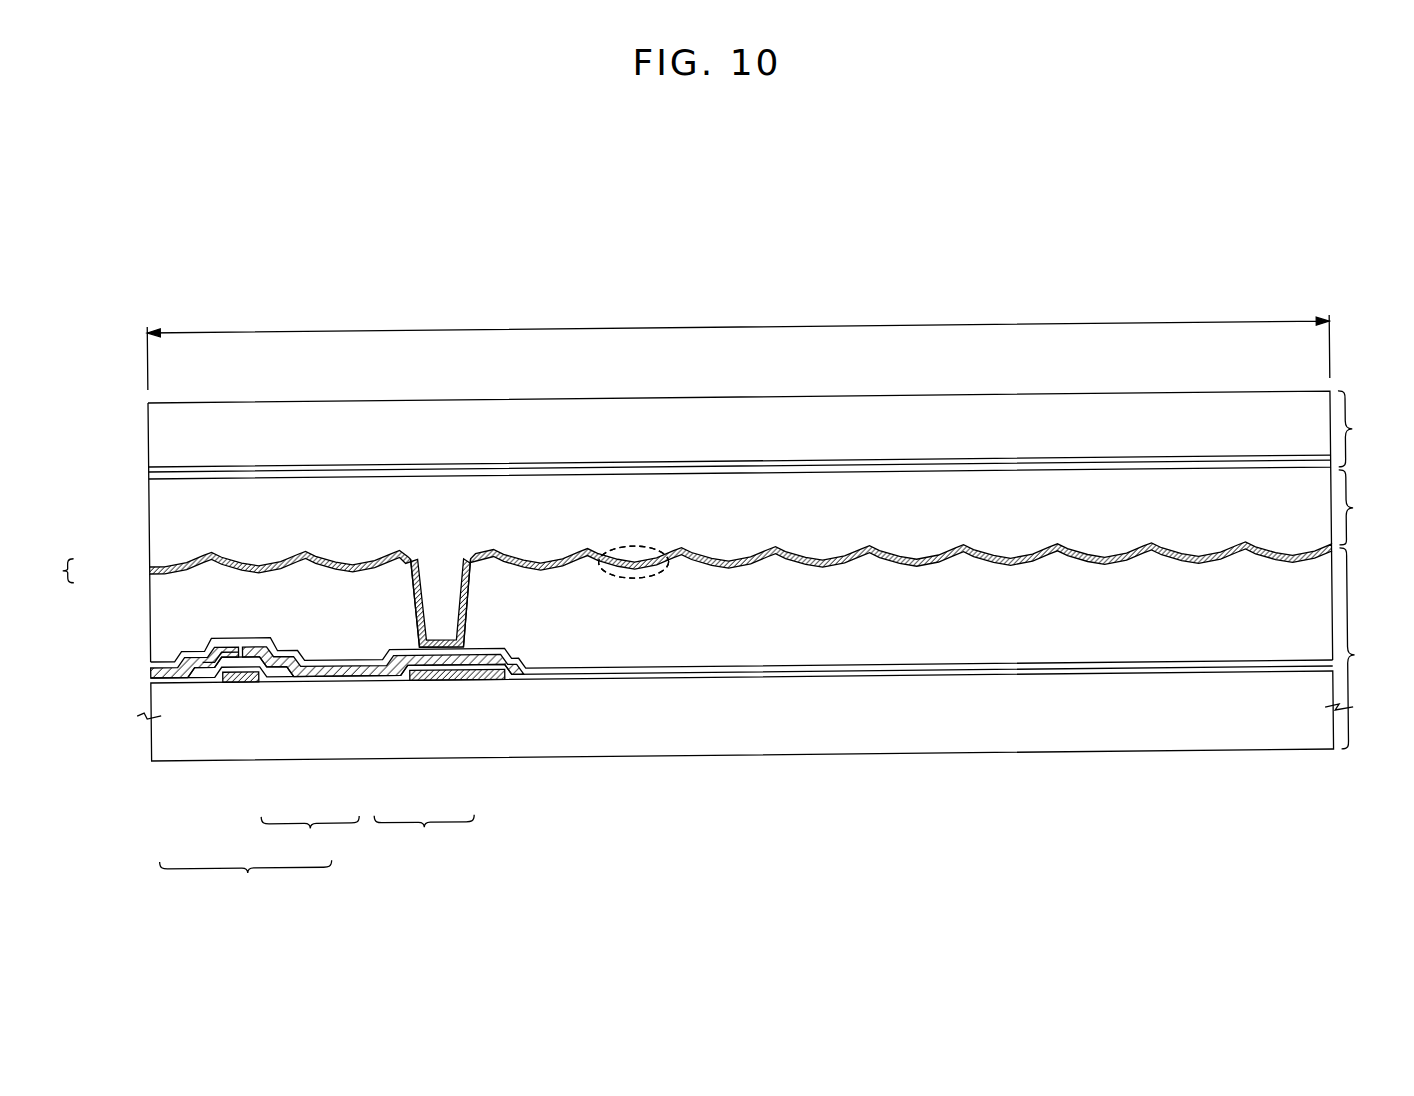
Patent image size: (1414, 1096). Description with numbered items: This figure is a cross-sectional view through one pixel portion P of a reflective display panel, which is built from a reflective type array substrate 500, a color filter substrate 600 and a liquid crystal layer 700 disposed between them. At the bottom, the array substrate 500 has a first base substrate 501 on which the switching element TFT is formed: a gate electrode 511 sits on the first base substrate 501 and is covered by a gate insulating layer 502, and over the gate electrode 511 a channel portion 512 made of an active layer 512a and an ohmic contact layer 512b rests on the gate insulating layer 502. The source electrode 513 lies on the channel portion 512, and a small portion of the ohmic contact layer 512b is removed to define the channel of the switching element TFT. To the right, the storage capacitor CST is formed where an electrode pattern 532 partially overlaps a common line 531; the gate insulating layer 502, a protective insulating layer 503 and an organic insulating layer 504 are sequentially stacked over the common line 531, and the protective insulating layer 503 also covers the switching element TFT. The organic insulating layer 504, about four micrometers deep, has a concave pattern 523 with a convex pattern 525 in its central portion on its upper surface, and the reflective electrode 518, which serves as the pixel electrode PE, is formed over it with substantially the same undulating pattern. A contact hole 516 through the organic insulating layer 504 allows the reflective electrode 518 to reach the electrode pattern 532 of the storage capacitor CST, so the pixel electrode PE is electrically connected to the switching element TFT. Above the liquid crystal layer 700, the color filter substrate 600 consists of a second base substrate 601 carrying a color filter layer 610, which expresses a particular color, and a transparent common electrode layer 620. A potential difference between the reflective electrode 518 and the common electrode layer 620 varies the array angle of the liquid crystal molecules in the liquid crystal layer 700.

The pixel portion P is at (738, 339).
The color filter substrate 600 is at (1366, 428).
The second base substrate 601 is at (150, 418).
The color filter layer 610 is at (150, 467).
The common electrode layer 620 is at (150, 479).
The liquid crystal layer 700 is at (772, 516).
The reflective type array substrate 500 is at (1360, 648).
The first base substrate 501 is at (134, 716).
The gate insulating layer 502 is at (150, 679).
The protective insulating layer 503 is at (150, 661).
The organic insulating layer 504 is at (150, 601).
The gate electrode 511 is at (232, 683).
The channel portion 512 is at (276, 756).
The active layer 512a is at (262, 673).
The ohmic contact layer 512b is at (277, 668).
The source electrode 513 is at (171, 683).
The contact hole 516 is at (449, 600).
The reflective electrode 518 is at (150, 570).
The pixel electrode PE is at (683, 596).
The concave pattern 523 is at (647, 556).
The convex pattern 525 is at (626, 556).
The common line 531 is at (447, 683).
The electrode pattern 532 is at (386, 672).
The switching element TFT is at (256, 775).
The storage capacitor CST is at (383, 752).